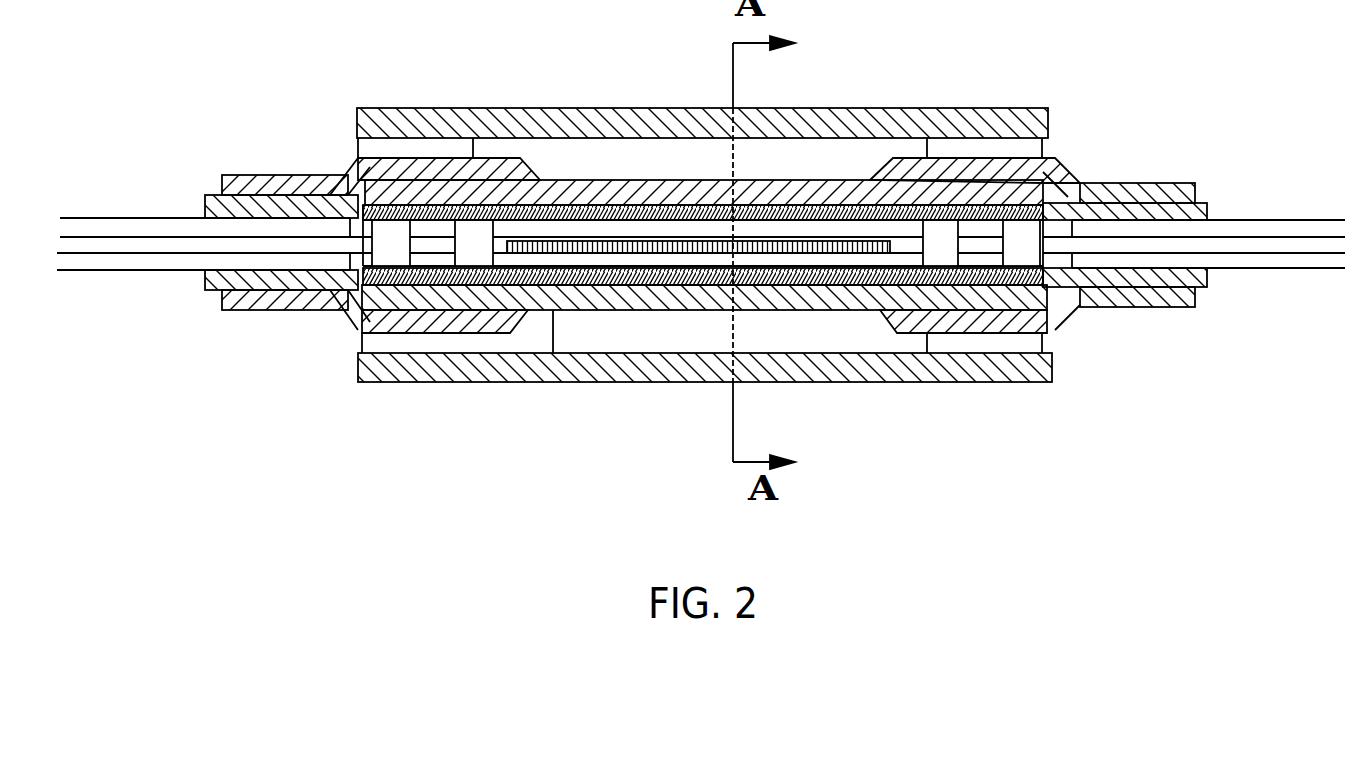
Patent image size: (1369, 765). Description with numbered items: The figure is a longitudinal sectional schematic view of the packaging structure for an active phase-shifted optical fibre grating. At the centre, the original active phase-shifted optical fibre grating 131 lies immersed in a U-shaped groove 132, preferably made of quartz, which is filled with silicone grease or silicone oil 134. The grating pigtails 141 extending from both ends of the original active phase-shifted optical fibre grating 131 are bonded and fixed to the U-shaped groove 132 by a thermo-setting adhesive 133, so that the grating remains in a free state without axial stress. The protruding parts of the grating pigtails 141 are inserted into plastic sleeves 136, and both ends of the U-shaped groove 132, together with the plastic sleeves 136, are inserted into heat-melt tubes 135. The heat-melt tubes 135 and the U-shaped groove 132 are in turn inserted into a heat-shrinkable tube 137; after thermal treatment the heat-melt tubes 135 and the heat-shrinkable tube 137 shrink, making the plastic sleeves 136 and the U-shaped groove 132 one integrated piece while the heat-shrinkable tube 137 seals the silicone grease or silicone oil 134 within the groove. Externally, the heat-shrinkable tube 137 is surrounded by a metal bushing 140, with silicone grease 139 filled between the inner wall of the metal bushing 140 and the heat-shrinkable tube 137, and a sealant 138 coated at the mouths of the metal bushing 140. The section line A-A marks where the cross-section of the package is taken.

The original active phase-shifted optical fibre grating 131 is at (648, 255).
The U-shaped groove 132 is at (563, 272).
The thermo-setting adhesive 133 is at (400, 248).
The silicone grease or silicone oil 134 is at (862, 255).
The heat-melt tube 135 is at (276, 300).
The plastic sleeve 136 is at (97, 258).
The heat-shrinkable tube 137 is at (270, 186).
The sealant 138 is at (960, 148).
The silicone grease 139 is at (597, 156).
The metal bushing 140 is at (481, 108).
The grating pigtail 141 is at (131, 247).